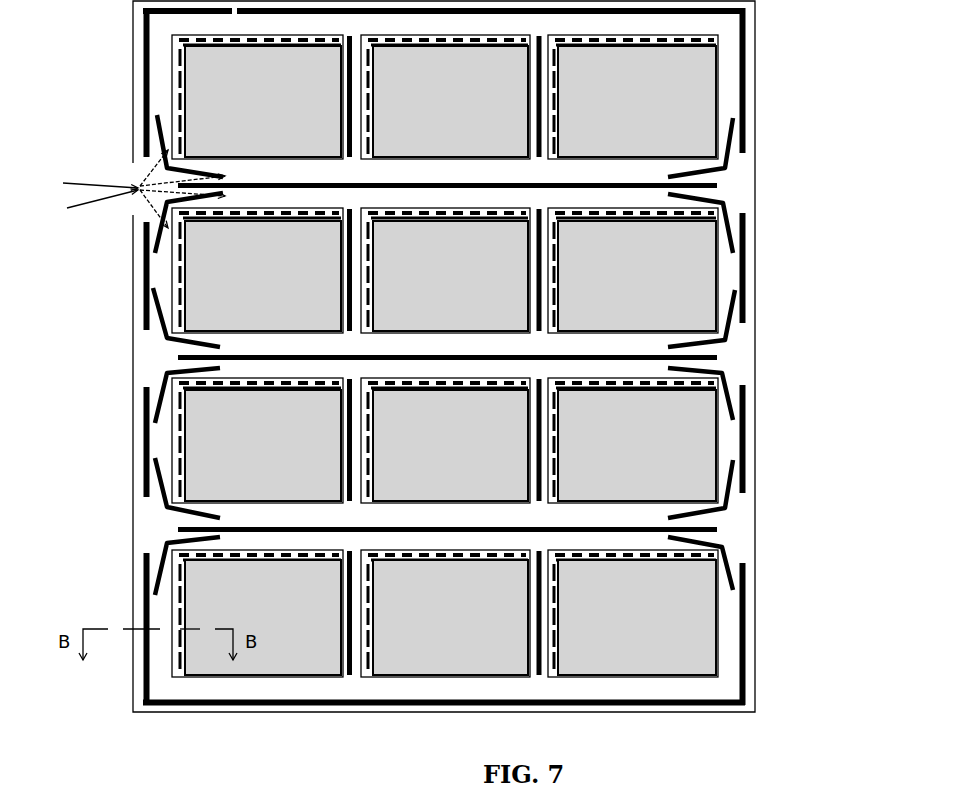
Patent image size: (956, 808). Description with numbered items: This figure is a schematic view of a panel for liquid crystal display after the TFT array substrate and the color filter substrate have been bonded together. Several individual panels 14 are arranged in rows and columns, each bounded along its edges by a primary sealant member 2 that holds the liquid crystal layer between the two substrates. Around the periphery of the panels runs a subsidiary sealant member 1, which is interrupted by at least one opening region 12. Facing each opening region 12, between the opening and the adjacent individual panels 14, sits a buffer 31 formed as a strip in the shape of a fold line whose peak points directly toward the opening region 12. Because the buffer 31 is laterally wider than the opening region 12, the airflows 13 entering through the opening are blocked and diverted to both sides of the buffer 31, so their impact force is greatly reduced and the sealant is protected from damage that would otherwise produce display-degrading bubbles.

The subsidiary sealant member 1 is at (542, 593).
The primary sealant member 2 is at (720, 430).
The opening region 12 is at (148, 537).
The airflows 13 is at (98, 195).
The individual panel 14 is at (532, 233).
The buffer 31 is at (733, 325).